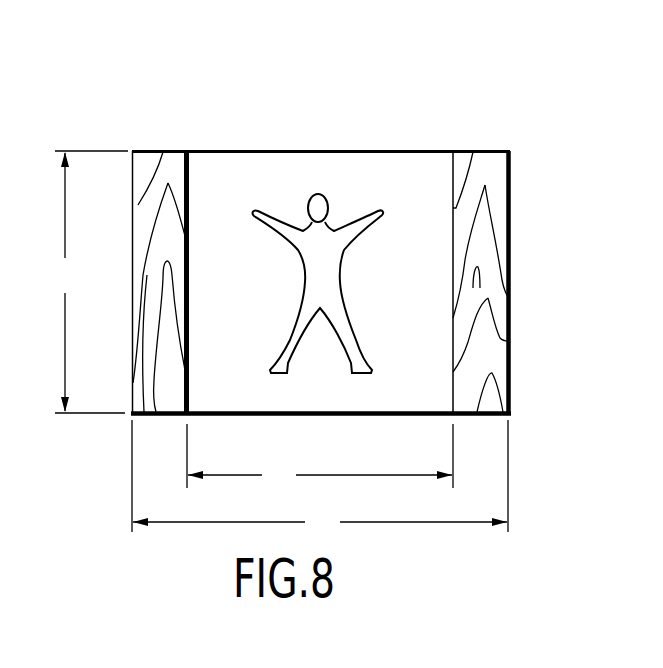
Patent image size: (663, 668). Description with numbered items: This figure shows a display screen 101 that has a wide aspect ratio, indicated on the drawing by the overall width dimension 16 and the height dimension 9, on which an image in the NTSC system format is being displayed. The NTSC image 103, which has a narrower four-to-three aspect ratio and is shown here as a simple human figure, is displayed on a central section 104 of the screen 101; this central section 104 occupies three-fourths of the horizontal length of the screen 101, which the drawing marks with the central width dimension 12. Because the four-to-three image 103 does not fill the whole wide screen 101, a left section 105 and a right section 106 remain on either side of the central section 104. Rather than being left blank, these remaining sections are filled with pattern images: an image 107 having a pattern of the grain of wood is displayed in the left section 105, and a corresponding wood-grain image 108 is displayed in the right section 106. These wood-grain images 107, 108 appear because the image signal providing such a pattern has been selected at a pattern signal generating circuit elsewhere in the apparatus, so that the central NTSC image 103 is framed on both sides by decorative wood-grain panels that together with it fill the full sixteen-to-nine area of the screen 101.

The screen 101 is at (383, 94).
The image 103 is at (325, 152).
The central section 104 is at (230, 152).
The left section 105 is at (155, 152).
The right section 106 is at (478, 152).
The image 107 is at (138, 404).
The image 108 is at (509, 294).
The height dimension 9 is at (91, 282).
The central panel width dimension 12 is at (320, 456).
The overall width dimension 16 is at (320, 478).